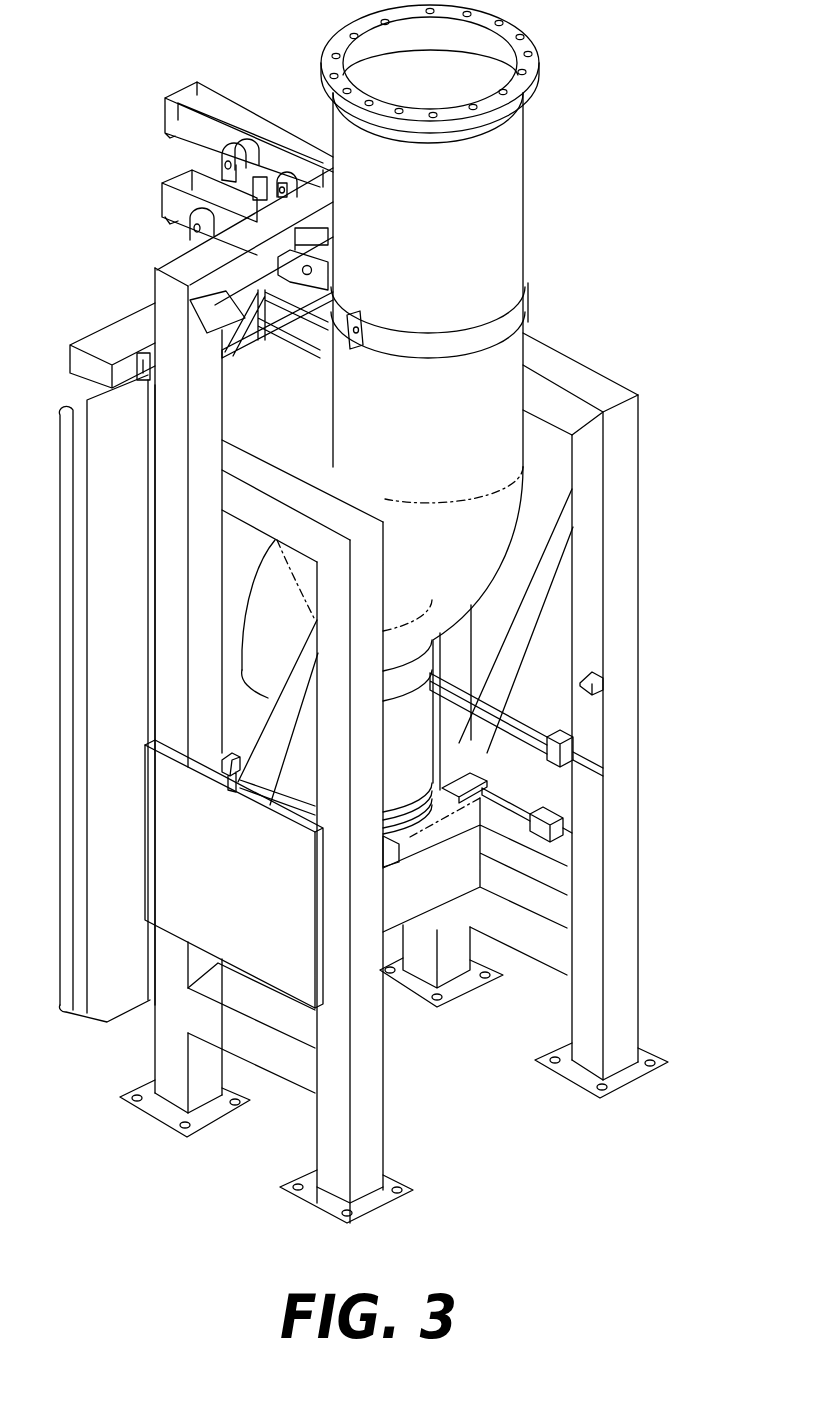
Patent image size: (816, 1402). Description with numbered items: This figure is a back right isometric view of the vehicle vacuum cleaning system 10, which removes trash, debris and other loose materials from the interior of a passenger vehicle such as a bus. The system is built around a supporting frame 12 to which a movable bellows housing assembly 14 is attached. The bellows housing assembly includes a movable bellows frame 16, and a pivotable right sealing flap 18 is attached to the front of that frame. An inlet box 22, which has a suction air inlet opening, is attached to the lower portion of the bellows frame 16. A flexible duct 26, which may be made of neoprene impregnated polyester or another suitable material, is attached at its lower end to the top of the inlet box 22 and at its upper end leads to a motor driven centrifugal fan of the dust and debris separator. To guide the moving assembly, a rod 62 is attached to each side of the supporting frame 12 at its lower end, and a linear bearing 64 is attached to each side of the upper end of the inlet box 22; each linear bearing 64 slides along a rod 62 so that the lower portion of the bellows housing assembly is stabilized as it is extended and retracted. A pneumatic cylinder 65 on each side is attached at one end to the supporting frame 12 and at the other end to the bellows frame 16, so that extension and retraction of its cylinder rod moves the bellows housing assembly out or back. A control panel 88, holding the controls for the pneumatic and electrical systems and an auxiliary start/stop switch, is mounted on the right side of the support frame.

The vehicle vacuum cleaning system 10 is at (645, 277).
The supporting frame 12 is at (638, 598).
The bellows housing assembly 14 is at (141, 1015).
The bellows frame 16 is at (298, 418).
The right sealing flap 18 is at (135, 577).
The inlet box 22 is at (448, 897).
The flexible duct 26 is at (523, 160).
The rod 62 is at (540, 800).
The linear bearing 64 is at (484, 780).
The pneumatic cylinder 65 is at (534, 723).
The control panel 88 is at (323, 970).